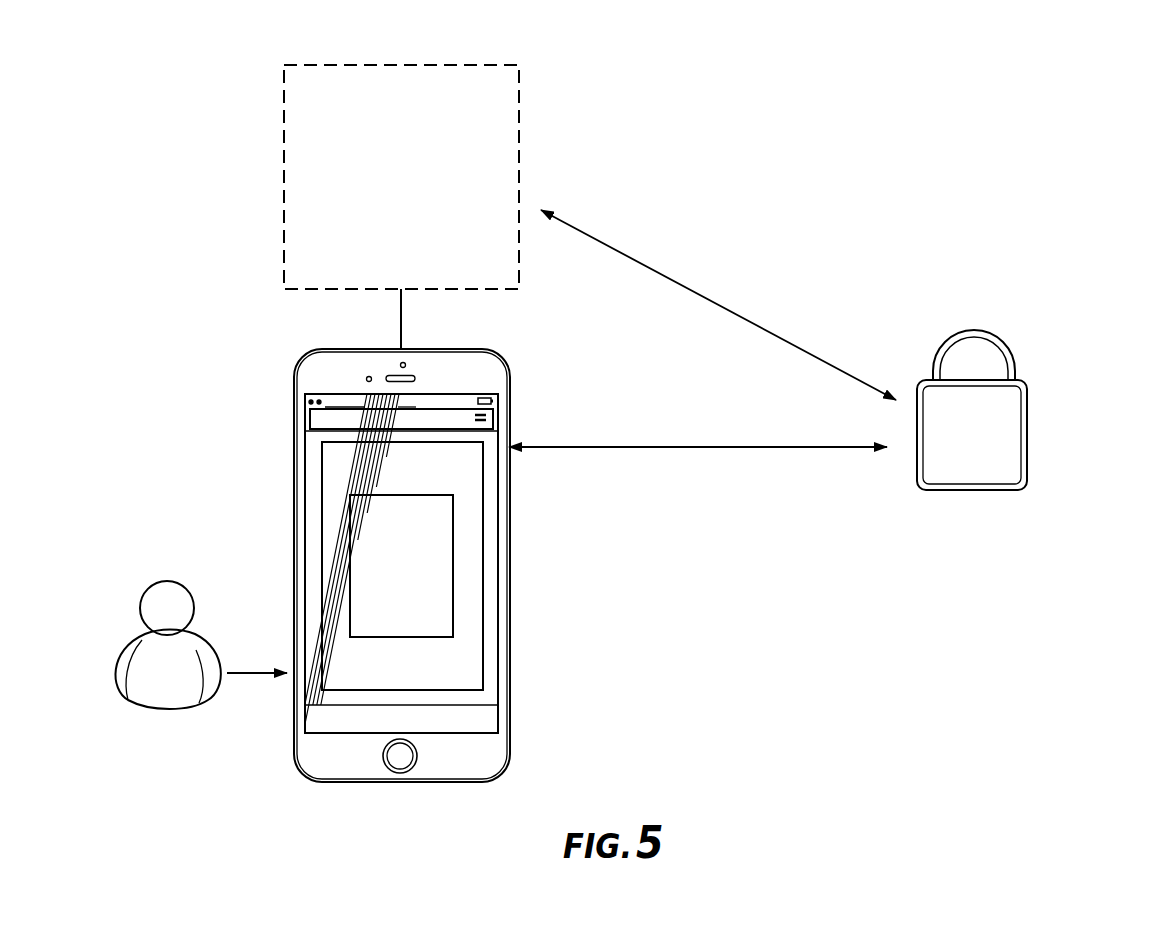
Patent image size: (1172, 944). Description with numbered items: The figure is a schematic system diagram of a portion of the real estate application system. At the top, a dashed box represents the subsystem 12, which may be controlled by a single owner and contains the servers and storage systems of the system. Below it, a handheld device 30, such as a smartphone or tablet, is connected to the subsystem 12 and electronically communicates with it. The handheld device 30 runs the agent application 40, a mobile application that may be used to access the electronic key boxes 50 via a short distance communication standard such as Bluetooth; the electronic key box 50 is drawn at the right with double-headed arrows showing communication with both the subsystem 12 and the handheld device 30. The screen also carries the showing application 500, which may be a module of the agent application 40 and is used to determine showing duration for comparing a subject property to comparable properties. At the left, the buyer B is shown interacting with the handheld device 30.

The subsystem 12 is at (519, 138).
The handheld device 30 is at (510, 408).
The agent application 40 is at (465, 545).
The electronic key box 50 is at (1000, 450).
The showing application 500 is at (362, 528).
The buyer B is at (155, 603).